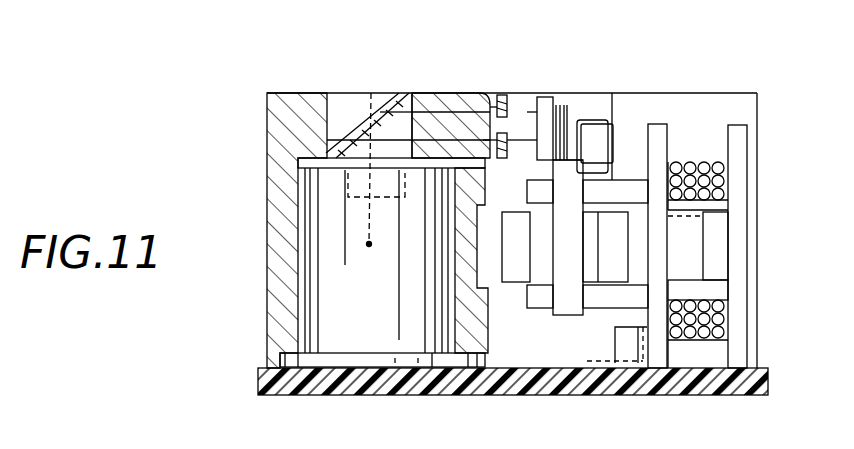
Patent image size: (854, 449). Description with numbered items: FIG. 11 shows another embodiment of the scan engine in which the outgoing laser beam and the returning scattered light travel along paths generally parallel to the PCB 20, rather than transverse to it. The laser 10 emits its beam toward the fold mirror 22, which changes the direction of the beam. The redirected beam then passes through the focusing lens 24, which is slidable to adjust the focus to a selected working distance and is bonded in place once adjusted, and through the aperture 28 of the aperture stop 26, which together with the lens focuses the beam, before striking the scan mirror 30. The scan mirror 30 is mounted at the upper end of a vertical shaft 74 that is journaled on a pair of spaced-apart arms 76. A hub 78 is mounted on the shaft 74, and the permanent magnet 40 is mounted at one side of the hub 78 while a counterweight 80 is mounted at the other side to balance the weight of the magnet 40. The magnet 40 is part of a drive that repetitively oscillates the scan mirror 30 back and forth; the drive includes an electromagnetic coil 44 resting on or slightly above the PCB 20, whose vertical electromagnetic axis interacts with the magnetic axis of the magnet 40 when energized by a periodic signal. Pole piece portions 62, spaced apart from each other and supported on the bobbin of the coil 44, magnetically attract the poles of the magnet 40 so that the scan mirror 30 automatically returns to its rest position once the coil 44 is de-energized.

The light source 10 is at (333, 272).
The base 20 is at (258, 386).
The fold mirror 22 is at (371, 93).
The focusing lens 24 is at (432, 103).
The aperture stop 26 is at (500, 95).
The aperture 28 is at (508, 120).
The scan mirror 30 is at (547, 97).
The magnet 40 is at (611, 218).
The electromagnetic coil 44 is at (700, 150).
The pole piece portions 62 is at (742, 227).
The vertical shaft 74 is at (573, 297).
The arms 76 is at (527, 188).
The hub 78 is at (590, 265).
The counterweight 80 is at (513, 270).